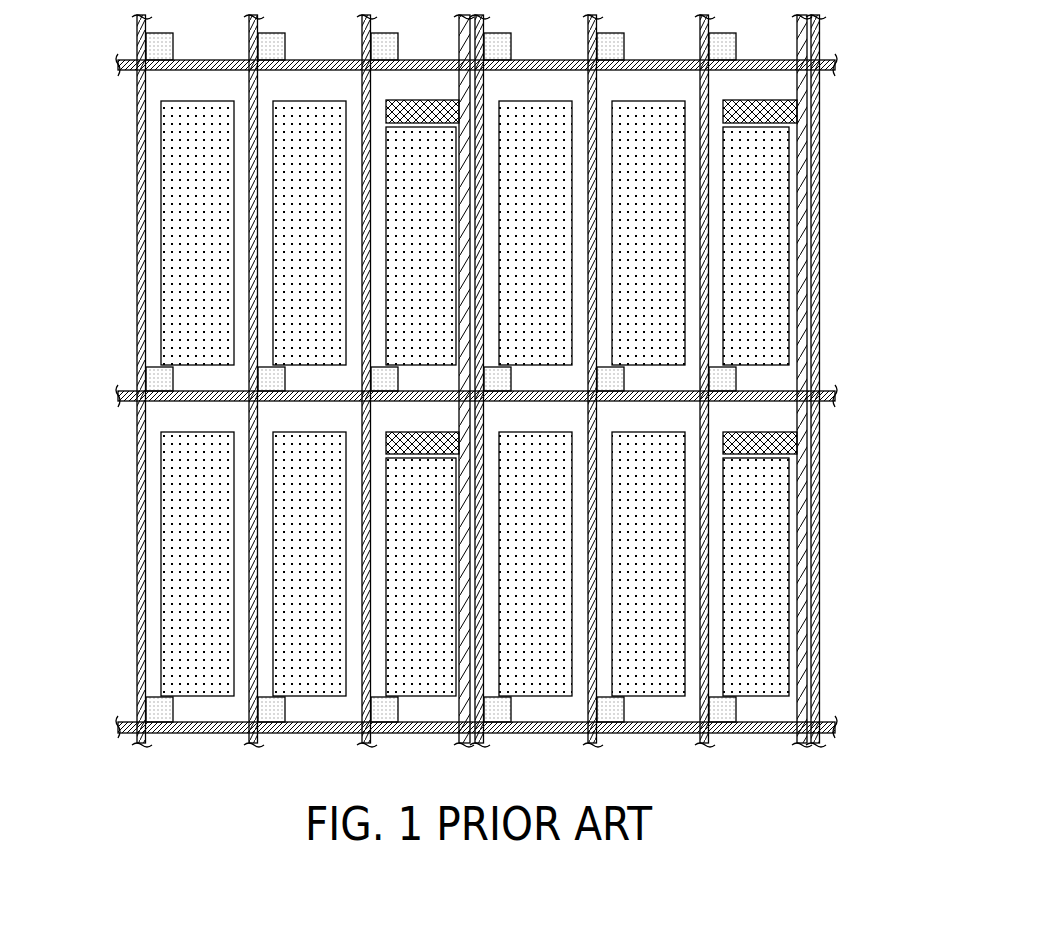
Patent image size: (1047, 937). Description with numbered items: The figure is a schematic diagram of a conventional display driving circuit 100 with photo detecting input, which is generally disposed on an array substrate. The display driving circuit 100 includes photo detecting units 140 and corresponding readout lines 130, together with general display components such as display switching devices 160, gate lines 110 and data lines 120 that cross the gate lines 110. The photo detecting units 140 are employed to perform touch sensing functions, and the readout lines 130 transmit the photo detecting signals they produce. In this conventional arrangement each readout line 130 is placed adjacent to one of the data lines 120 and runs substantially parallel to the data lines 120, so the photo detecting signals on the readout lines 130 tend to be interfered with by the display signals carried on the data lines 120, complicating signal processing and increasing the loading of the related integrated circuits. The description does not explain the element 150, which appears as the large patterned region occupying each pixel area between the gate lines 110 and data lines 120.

The display panel (prior art) 100 is at (532, 403).
The scan line 110 is at (117, 65).
The data line 120 is at (141, 745).
The power line 130 is at (459, 745).
The storage capacitor region 140 is at (785, 441).
The pixel electrode 150 is at (773, 274).
The thin film transistor 160 is at (157, 372).